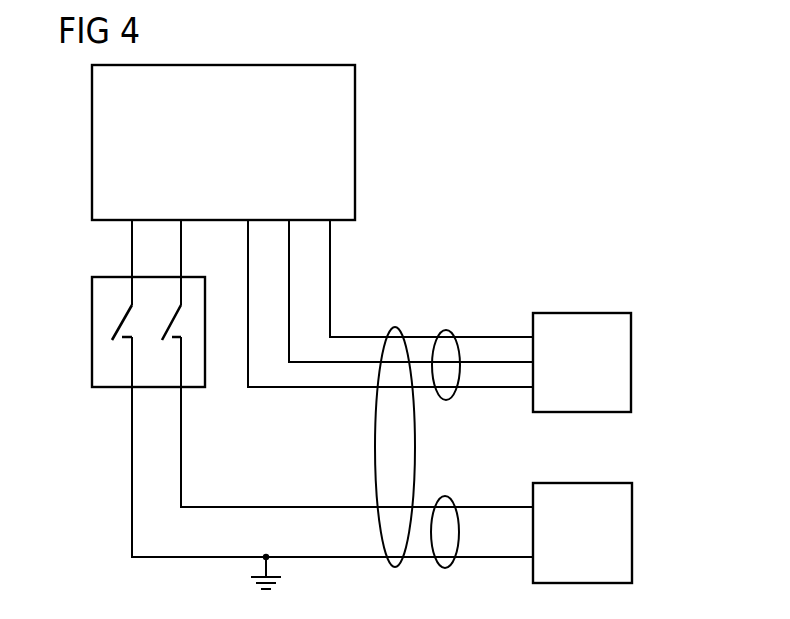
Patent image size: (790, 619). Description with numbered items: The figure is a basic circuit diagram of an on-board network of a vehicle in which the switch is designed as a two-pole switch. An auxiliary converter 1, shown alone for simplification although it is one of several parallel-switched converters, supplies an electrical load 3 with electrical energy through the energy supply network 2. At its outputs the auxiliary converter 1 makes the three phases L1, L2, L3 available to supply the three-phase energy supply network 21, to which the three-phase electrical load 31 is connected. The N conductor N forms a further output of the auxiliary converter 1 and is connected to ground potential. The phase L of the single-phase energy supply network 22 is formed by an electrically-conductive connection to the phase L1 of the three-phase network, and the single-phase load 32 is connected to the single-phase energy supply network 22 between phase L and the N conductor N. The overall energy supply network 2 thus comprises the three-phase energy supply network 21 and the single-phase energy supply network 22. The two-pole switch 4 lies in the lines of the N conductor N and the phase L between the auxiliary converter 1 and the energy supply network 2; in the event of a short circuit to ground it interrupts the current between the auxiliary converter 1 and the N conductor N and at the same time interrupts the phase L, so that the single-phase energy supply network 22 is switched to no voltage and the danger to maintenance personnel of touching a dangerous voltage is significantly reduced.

The auxiliary converter 1 is at (355, 147).
The energy supply network 2 is at (395, 327).
The electrical load 3 is at (613, 394).
The switch 4 is at (92, 333).
The three-phase energy supply network 21 is at (446, 330).
The single-phase energy supply network 22 is at (445, 497).
The three-phase electrical load 31 is at (631, 363).
The single-phase load 32 is at (632, 533).
The phase L1 is at (297, 390).
The phase L2 is at (340, 365).
The phase L3 is at (329, 252).
The phase L is at (181, 455).
The N conductor N is at (132, 455).